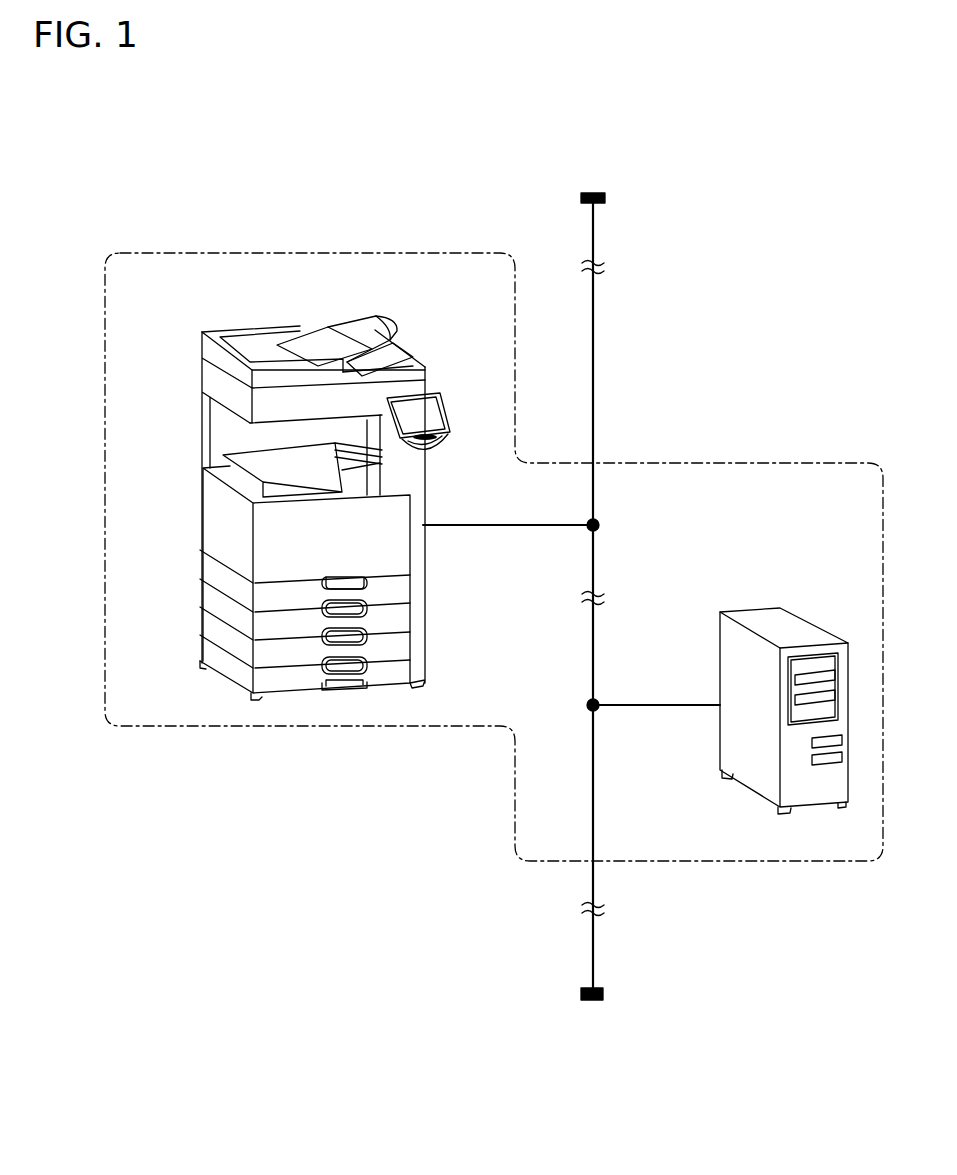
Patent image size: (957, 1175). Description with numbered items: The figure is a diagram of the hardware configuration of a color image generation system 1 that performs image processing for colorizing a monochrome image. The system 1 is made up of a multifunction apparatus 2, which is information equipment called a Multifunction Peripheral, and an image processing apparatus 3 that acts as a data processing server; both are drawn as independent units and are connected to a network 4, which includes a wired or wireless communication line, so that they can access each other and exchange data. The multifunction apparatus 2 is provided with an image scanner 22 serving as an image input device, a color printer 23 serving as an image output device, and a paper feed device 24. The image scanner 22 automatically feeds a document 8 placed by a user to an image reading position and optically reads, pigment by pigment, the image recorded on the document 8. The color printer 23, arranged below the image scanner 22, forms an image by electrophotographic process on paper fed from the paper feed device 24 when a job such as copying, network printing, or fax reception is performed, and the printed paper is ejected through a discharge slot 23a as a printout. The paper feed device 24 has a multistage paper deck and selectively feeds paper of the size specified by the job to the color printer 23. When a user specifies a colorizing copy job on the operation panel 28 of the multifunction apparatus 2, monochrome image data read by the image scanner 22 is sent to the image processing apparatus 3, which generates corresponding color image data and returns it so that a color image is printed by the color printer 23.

The color image generation system 1 is at (743, 463).
The multifunction apparatus 2 is at (319, 488).
The image processing apparatus 3 is at (762, 617).
The network 4 is at (598, 353).
The document 8 is at (310, 341).
The image scanner 22 is at (217, 381).
The color printer 23 is at (217, 503).
The discharge slot 23a is at (345, 453).
The paper feed device 24 is at (217, 588).
The operation panel 28 is at (442, 418).